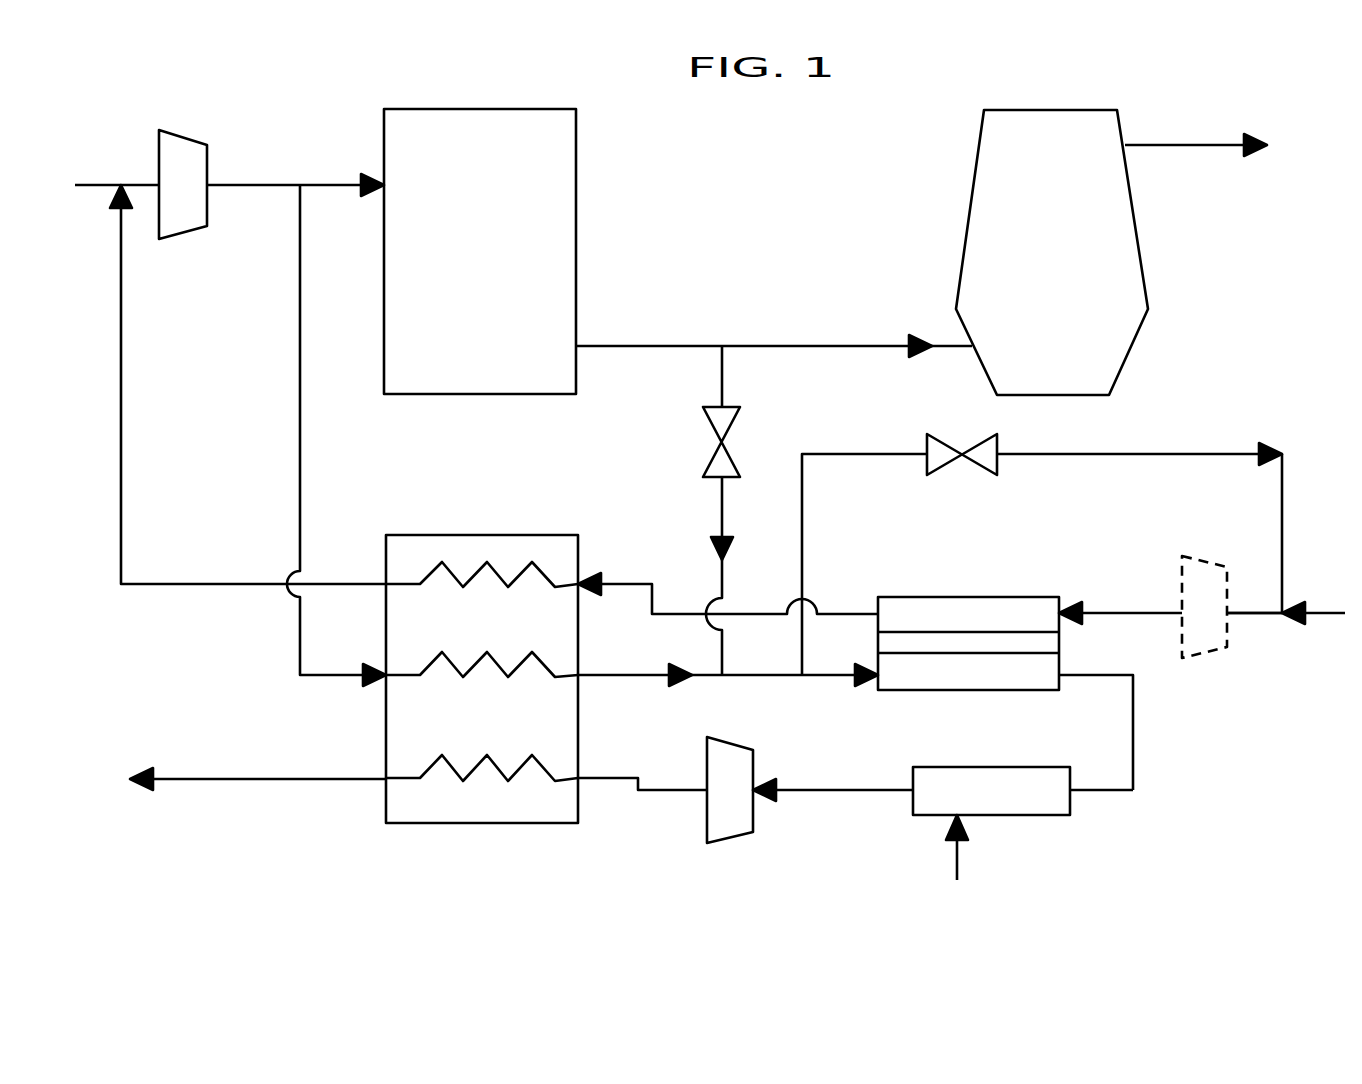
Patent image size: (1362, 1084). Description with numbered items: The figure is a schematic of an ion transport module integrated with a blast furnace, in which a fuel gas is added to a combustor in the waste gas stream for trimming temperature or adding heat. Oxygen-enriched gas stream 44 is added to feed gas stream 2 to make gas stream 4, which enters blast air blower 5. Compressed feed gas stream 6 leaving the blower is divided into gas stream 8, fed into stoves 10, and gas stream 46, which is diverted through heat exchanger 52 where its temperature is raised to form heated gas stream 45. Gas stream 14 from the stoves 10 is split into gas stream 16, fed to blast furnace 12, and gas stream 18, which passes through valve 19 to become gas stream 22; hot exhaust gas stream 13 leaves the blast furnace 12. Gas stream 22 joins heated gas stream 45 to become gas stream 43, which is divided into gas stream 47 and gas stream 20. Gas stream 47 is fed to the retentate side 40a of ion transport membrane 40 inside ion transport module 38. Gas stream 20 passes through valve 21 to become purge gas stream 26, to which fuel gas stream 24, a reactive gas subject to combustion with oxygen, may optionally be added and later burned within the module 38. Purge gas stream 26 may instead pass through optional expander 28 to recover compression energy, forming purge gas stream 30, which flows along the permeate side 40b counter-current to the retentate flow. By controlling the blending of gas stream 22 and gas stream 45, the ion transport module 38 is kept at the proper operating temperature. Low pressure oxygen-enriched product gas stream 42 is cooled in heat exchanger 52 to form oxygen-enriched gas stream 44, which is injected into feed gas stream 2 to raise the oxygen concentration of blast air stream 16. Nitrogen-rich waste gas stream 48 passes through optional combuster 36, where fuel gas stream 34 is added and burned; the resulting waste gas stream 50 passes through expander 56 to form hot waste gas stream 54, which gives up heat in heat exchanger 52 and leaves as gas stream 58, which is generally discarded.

The feed gas stream 2 is at (94, 189).
The gas stream 4 is at (149, 183).
The blast air blower 5 is at (196, 145).
The compressed feed gas stream 6 is at (250, 188).
The gas stream 8 is at (335, 190).
The stoves 10 is at (575, 165).
The blast furnace 12 is at (973, 181).
The hot exhaust gas stream 13 is at (1203, 140).
The gas stream 14 is at (613, 343).
The gas stream 16 is at (863, 340).
The gas stream 18 is at (722, 372).
The valve 19 is at (735, 420).
The gas stream 20 is at (873, 450).
The valve 21 is at (977, 440).
The gas stream 22 is at (718, 500).
The fuel gas stream 24 is at (1342, 614).
The purge gas stream 26 is at (1253, 607).
The optional expander 28 is at (1210, 650).
The purge gas stream 30 is at (1117, 608).
The fuel gas stream 34 is at (950, 855).
The optional combuster 36 is at (1033, 820).
The ion transport module 38 is at (1040, 693).
The ion transport membrane 40 is at (876, 638).
The retentate side 40a is at (907, 658).
The permeate side 40b is at (978, 635).
The oxygen-enriched product gas stream 42 is at (618, 580).
The gas stream 43 is at (778, 673).
The oxygen-enriched gas stream 44 is at (121, 466).
The heated gas stream 45 is at (632, 677).
The gas stream 46 is at (303, 447).
The gas stream 47 is at (828, 673).
The nitrogen-rich waste gas stream 48 is at (1093, 793).
The waste gas stream 50 is at (807, 793).
The heat exchanger 52 is at (517, 535).
The hot waste gas stream 54 is at (668, 794).
The expander 56 is at (737, 833).
The gas stream 58 is at (210, 781).